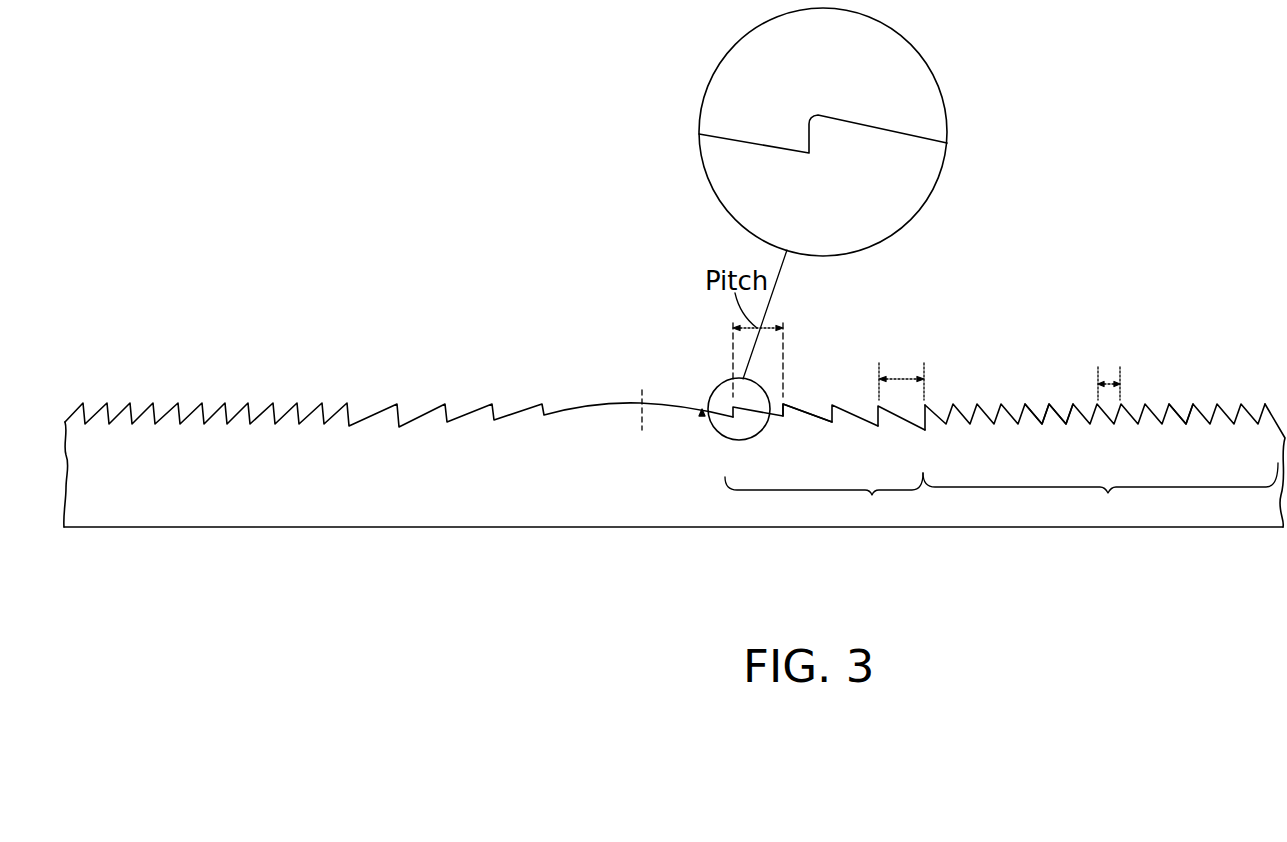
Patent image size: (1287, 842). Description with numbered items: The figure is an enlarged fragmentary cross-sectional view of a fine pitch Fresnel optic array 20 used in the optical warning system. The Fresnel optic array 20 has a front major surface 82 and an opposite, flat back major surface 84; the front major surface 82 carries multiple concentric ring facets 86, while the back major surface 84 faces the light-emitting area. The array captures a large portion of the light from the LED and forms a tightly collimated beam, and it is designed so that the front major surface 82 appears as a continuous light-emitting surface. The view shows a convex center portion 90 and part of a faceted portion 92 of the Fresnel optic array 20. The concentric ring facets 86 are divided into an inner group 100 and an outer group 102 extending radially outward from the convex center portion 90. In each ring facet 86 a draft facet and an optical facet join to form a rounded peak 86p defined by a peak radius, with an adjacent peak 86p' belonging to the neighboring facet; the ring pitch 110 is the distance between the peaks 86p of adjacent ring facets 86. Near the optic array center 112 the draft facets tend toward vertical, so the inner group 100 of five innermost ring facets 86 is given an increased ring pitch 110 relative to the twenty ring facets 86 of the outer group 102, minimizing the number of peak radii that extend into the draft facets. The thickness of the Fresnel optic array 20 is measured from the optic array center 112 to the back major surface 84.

The Fresnel optic array 20 is at (674, 421).
The front major surface 82 is at (1229, 378).
The back major surface 84 is at (1039, 544).
The concentric ring facets 86 is at (830, 403).
The rounded peak 86p is at (954, 382).
The tooth face (preceding pitch tooth) 86p' is at (873, 361).
The convex center portion 90 is at (604, 370).
The faceted portion 92 is at (1005, 380).
The inner group 100 is at (854, 409).
The outer group 102 is at (1100, 398).
The ring pitch 110 is at (900, 378).
The optic array center 112 is at (638, 418).